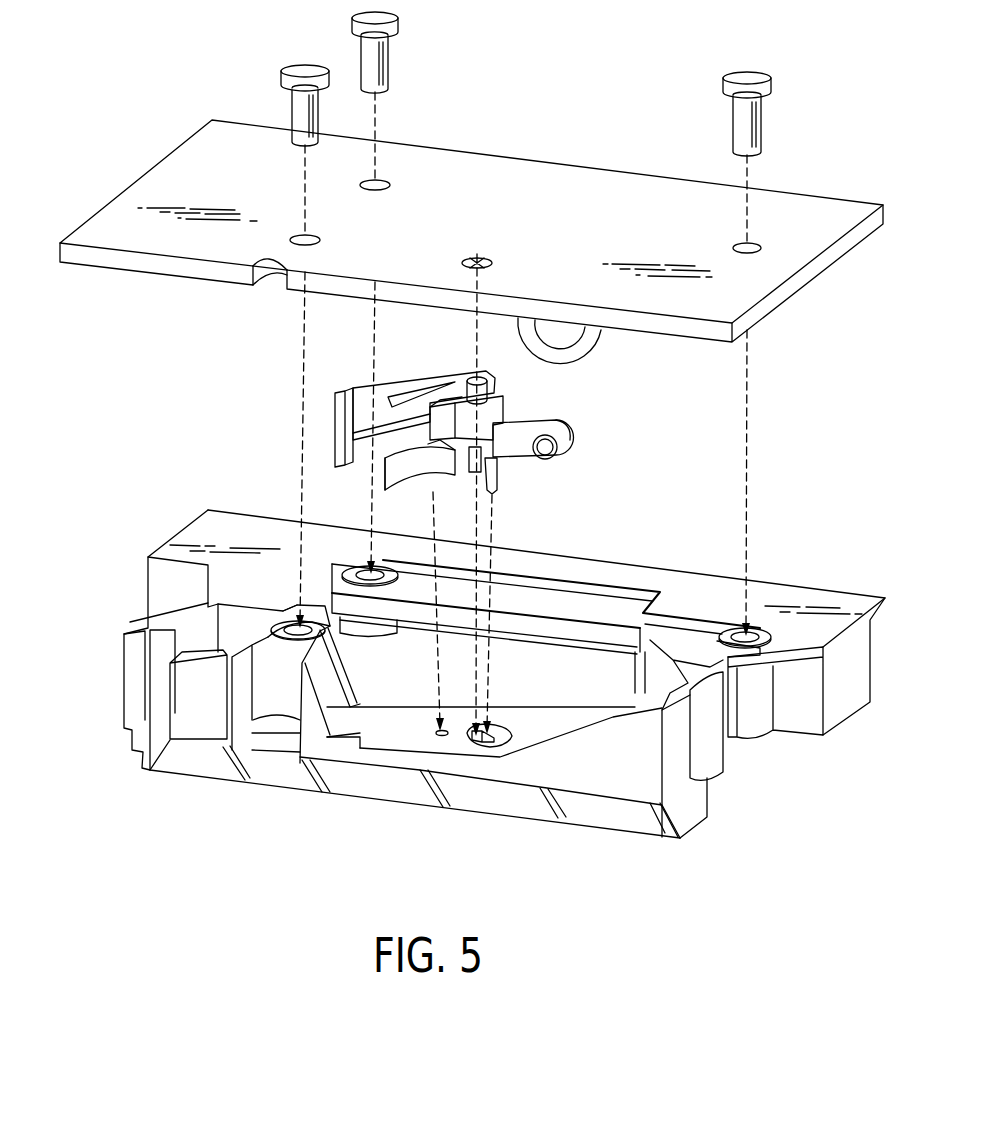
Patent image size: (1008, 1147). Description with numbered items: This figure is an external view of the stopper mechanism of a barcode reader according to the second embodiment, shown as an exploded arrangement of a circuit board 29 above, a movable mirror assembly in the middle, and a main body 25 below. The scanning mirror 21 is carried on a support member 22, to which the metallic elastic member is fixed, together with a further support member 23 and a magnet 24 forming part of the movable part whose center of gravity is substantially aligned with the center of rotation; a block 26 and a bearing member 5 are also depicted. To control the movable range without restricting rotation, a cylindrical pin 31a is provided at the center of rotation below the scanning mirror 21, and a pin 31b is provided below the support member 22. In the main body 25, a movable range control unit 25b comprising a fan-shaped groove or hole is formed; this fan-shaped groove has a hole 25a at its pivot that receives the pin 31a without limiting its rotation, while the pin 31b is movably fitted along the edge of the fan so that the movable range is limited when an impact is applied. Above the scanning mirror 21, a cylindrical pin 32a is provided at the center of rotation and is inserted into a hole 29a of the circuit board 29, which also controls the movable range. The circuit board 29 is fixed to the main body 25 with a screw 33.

The bearing member 5 is at (600, 337).
The scanning mirror 21 is at (342, 397).
The support member 22 is at (378, 408).
The support member 23 is at (523, 457).
The magnet 24 is at (570, 428).
The main body 25 is at (832, 598).
The hole 25a is at (460, 738).
The movable range control unit 25b is at (487, 747).
The block 26 is at (402, 477).
The circuit board 29 is at (828, 210).
The hole 29a is at (484, 258).
The cylindrical pin 31a is at (470, 474).
The pin 31b is at (496, 494).
The cylindrical pin 32a is at (481, 390).
The screw 33 is at (773, 87).